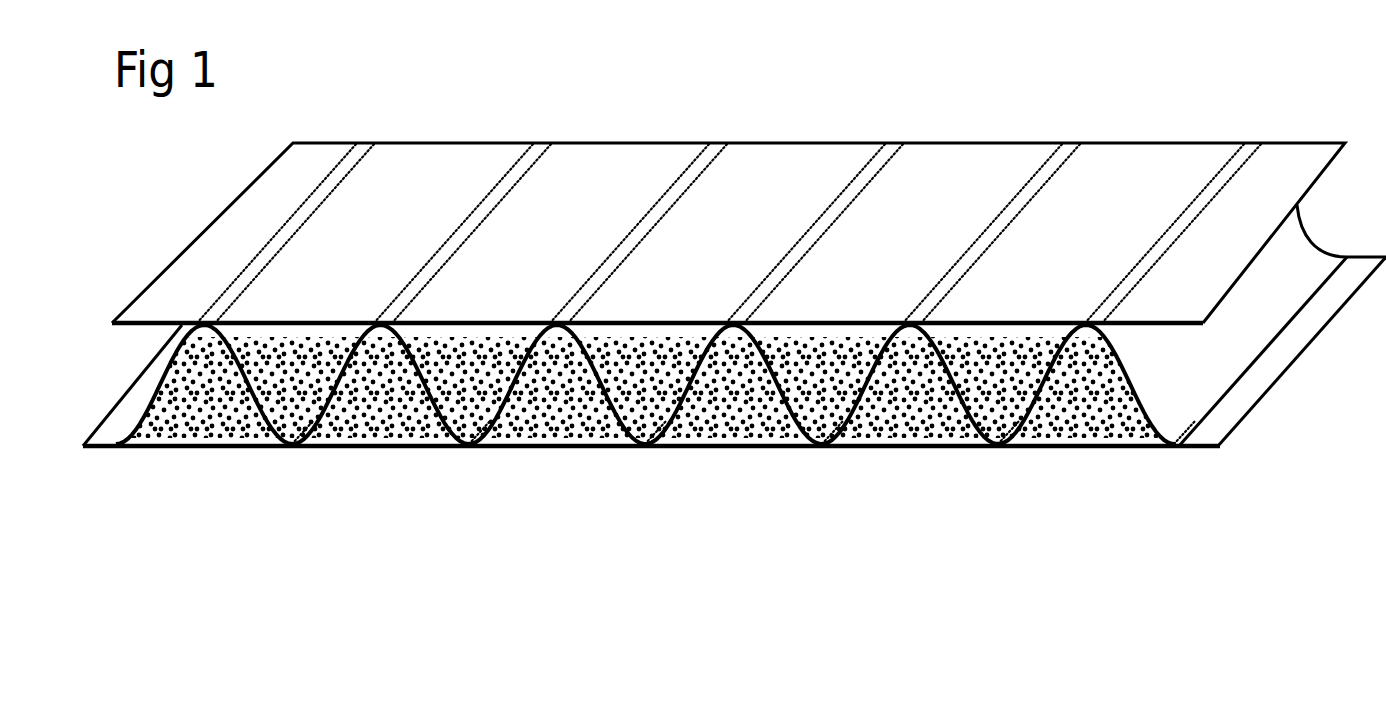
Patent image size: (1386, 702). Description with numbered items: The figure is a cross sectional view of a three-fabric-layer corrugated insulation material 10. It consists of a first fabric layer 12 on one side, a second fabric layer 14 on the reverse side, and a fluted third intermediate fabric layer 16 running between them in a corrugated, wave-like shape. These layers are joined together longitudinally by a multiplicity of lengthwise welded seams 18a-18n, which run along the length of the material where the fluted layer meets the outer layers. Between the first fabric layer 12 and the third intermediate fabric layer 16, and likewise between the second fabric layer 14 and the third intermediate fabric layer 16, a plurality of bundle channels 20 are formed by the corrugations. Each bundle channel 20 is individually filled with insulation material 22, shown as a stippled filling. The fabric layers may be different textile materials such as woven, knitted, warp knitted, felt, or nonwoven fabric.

The 3-fabric layer corrugated insulation material 10 is at (380, 82).
The first fabric layer 12 is at (842, 325).
The second fabric layer 14 is at (910, 448).
The fluted third intermediate fabric layer 16 is at (977, 430).
The lengthwise welded seam 18a is at (533, 160).
The lengthwise welded seam 18n is at (292, 446).
The bundle channel 20 is at (1052, 408).
The insulation material 22 is at (1117, 428).